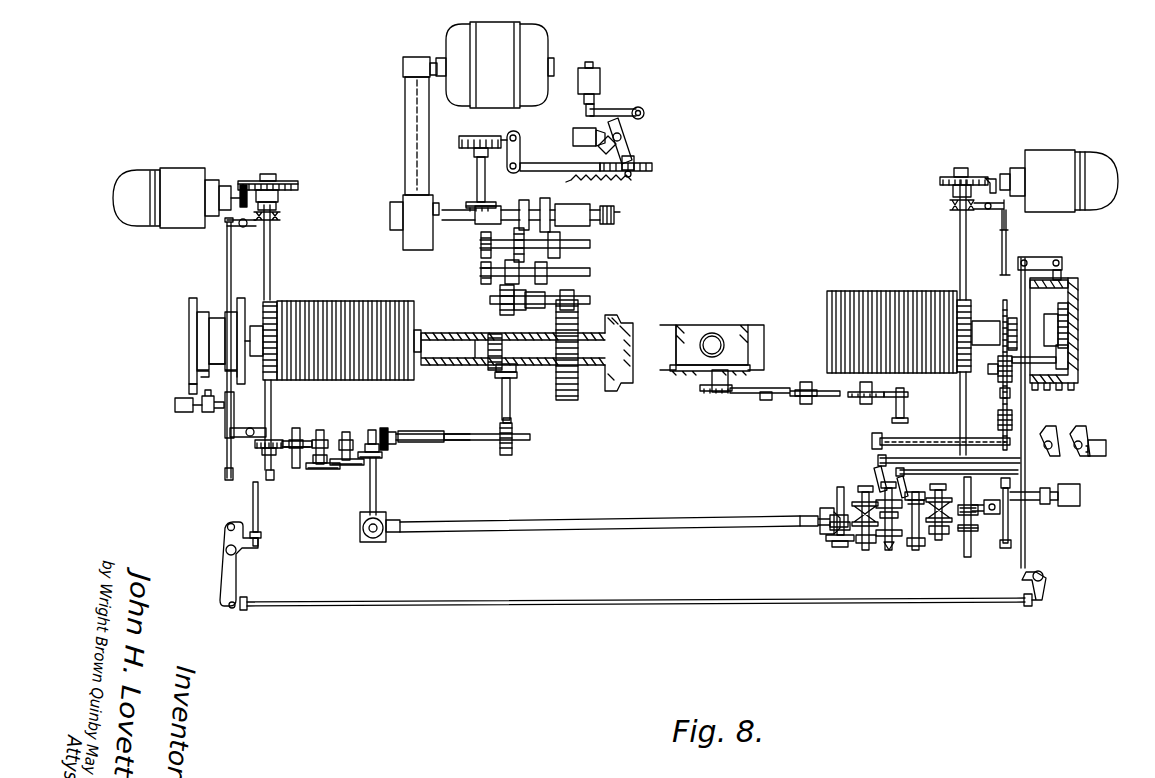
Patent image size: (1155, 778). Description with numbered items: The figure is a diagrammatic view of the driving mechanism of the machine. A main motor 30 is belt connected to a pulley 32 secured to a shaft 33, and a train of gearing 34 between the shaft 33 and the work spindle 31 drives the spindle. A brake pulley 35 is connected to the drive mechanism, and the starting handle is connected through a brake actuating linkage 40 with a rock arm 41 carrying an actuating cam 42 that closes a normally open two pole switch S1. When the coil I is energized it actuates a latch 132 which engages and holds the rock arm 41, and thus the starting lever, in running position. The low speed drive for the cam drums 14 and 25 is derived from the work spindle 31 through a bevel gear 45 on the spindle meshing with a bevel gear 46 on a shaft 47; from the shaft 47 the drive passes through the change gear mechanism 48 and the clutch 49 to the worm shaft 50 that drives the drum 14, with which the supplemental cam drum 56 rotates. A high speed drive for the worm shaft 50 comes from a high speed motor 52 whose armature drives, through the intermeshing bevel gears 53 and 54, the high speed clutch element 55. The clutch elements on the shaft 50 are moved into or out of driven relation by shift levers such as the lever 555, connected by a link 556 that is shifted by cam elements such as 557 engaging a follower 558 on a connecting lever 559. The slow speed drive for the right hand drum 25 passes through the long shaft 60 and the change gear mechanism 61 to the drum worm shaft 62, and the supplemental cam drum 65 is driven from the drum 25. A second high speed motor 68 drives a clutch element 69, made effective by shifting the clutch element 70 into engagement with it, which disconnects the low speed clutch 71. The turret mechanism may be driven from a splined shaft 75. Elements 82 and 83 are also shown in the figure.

The cam drum 14 is at (341, 301).
The cam drum 25 is at (880, 291).
The main motor 30 is at (535, 58).
The work spindle 31 is at (589, 332).
The pulley 32 is at (415, 250).
The shaft 33 is at (460, 224).
The train of gearing 34 is at (590, 230).
The brake pulley 35 is at (464, 138).
The brake actuating linkage 40 is at (563, 172).
The rock arm 41 is at (634, 150).
The actuating cam 42 is at (582, 141).
The bevel gear 45 is at (490, 362).
The bevel gear 46 is at (516, 370).
The shaft 47 is at (516, 415).
The change gear mechanism 48 is at (298, 428).
The clutch 49 is at (260, 454).
The worm shaft 50 is at (272, 406).
The high speed motor 52 is at (141, 222).
The bevel gear 53 is at (244, 183).
The bevel gear 54 is at (284, 181).
The clutch element 55 is at (280, 203).
The supplemental cam drum 56 is at (212, 306).
The long shaft 60 is at (647, 518).
The change gear mechanism 61 is at (875, 456).
The drum worm shaft 62 is at (961, 268).
The supplemental cam drum 65 is at (1072, 284).
The high speed motor 68 is at (1050, 165).
The clutch element 69 is at (952, 190).
The clutch element 70 is at (955, 212).
The clutch 71 is at (977, 496).
The splined shaft 75 is at (934, 438).
The pulley 82 is at (192, 351).
The gear 83 is at (1080, 378).
The latch 132 is at (630, 108).
The shift lever 555 is at (245, 428).
The link 556 is at (230, 254).
The cam element 557 is at (192, 386).
The follower 558 is at (204, 408).
The connecting lever 559 is at (218, 410).
The coil I is at (589, 83).
The two pole switch S1 is at (578, 128).